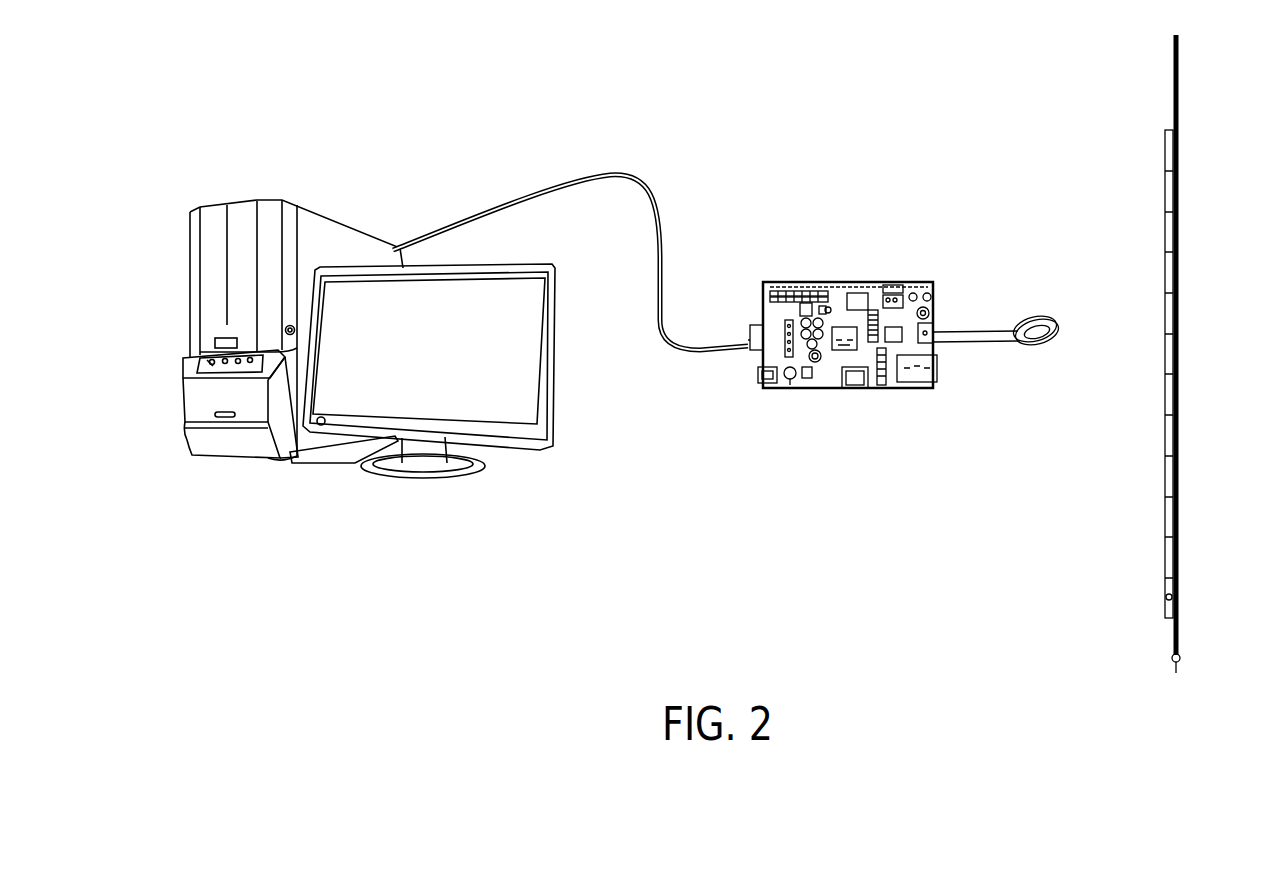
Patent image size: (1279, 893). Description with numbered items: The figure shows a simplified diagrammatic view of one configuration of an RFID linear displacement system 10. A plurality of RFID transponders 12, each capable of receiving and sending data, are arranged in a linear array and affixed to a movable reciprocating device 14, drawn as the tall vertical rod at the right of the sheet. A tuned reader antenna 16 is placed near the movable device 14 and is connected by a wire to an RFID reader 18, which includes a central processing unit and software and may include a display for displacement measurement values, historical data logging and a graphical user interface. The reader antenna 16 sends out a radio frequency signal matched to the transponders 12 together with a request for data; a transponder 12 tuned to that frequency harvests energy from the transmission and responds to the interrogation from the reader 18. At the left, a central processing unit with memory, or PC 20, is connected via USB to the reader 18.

The RFID linear displacement system 10 is at (1180, 413).
The RFID transponders 12 is at (1170, 475).
The movable reciprocating device 14 is at (1180, 98).
The tuned reader antenna 16 is at (1030, 350).
The RFID reader 18 is at (833, 353).
The PC 20 is at (238, 222).